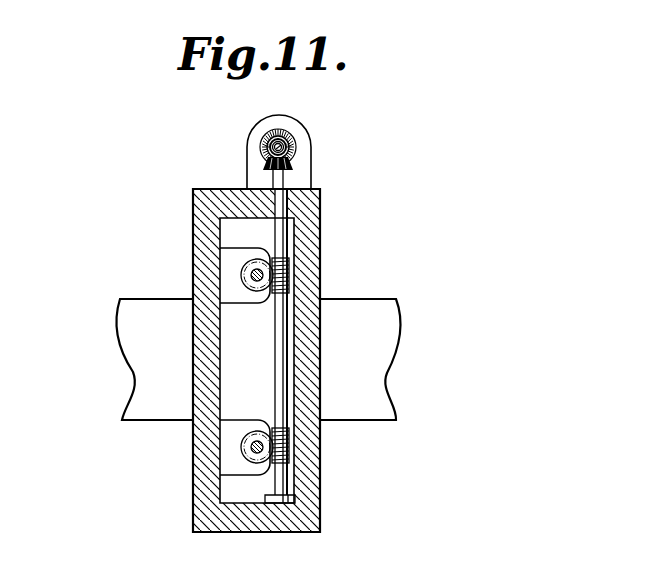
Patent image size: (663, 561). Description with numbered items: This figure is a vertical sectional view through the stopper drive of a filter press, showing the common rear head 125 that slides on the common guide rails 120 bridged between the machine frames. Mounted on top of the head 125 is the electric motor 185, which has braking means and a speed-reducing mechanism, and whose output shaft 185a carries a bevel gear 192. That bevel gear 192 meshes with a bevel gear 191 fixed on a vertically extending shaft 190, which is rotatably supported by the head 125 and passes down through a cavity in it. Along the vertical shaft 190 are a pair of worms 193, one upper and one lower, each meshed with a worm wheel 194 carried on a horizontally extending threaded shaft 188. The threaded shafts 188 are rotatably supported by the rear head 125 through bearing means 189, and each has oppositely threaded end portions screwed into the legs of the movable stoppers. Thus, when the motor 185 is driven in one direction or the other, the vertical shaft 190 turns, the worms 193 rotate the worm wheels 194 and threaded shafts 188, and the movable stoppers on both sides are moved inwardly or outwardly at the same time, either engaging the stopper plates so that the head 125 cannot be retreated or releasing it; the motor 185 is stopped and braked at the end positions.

The guide rails 120 is at (372, 315).
The common rear head 125 is at (301, 205).
The electric motor 185 is at (303, 138).
The output shaft 185a is at (262, 156).
The threaded shafts 188 is at (240, 267).
The bearing means 189 is at (237, 253).
The vertical shaft 190 is at (278, 313).
The bevel gear 191 is at (290, 159).
The bevel gear 192 is at (260, 168).
The worms 193 is at (290, 280).
The worm wheels 194 is at (253, 276).